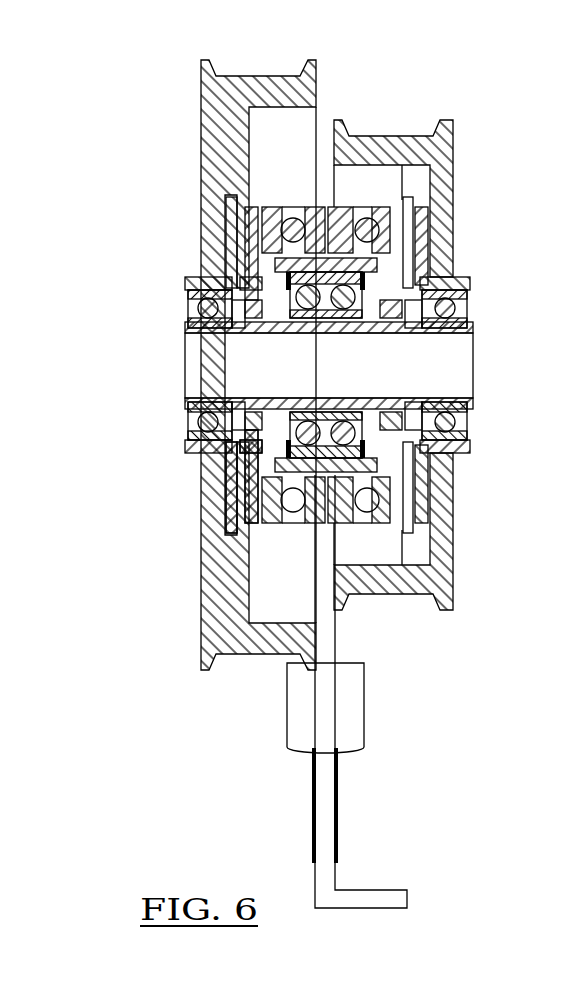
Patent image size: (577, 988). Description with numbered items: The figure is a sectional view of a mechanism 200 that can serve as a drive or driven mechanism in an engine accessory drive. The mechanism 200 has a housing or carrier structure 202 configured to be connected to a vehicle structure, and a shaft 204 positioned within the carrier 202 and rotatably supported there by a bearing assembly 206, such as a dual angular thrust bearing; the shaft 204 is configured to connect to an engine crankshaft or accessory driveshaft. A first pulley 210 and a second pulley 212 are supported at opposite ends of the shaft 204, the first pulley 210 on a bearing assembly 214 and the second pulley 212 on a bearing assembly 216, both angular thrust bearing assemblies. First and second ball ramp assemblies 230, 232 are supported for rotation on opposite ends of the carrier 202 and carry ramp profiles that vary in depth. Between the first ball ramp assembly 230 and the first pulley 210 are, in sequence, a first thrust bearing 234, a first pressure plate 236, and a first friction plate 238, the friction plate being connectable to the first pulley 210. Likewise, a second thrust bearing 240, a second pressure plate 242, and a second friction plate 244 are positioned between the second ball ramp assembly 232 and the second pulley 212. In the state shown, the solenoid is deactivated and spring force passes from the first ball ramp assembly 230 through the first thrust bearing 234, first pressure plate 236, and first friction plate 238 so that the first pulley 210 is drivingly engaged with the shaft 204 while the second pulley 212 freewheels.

The mechanism 200 is at (132, 111).
The carrier structure 202 is at (323, 507).
The shaft 204 is at (428, 375).
The bearing assembly 206 is at (300, 418).
The first pulley 210 is at (400, 147).
The second pulley 212 is at (255, 85).
The bearing assembly 214 is at (462, 307).
The bearing assembly 216 is at (208, 308).
The first ball ramp assembly 230 is at (373, 210).
The second ball ramp assembly 232 is at (290, 230).
The first thrust bearing 234 is at (413, 286).
The first pressure plate 236 is at (380, 257).
The first friction plate 238 is at (432, 226).
The second thrust bearing 240 is at (253, 442).
The second pressure plate 242 is at (253, 468).
The second friction plate 244 is at (232, 503).